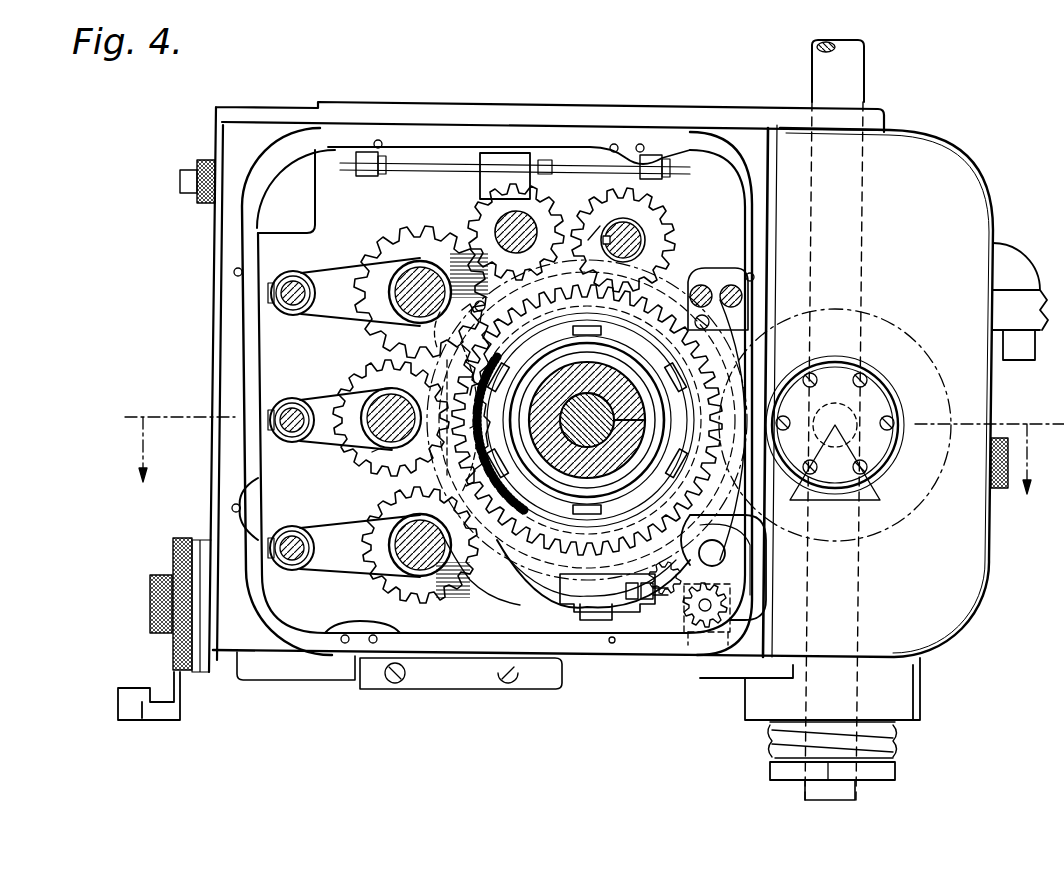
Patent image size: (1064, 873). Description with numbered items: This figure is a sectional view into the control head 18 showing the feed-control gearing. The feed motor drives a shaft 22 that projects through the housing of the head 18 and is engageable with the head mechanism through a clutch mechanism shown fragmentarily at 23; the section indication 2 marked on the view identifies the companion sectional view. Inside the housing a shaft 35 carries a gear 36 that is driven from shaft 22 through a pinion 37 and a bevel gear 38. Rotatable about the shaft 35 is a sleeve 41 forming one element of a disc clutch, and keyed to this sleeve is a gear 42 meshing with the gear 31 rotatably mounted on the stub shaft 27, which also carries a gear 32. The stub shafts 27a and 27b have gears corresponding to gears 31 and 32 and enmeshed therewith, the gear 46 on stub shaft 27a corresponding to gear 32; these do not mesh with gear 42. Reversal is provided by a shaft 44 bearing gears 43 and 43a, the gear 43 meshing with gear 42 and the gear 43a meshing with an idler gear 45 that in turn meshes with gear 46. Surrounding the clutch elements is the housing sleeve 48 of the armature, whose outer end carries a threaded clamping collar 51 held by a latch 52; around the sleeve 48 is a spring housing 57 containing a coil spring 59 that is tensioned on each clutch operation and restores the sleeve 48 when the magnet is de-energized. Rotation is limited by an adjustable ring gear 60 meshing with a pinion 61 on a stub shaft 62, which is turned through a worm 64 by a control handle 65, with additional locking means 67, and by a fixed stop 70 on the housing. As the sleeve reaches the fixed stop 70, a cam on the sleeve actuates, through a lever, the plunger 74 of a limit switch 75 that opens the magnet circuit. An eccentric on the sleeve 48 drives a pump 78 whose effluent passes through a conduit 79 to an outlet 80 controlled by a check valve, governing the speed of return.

The section line 2- 2 is at (593, 455).
The head 18 is at (922, 153).
The shaft 22 is at (830, 70).
The clutch mechanism 23 is at (887, 782).
The stub shaft 27 is at (363, 437).
The stub shaft 27a is at (401, 277).
The stub shaft 27b is at (404, 588).
The gear 31 is at (372, 368).
The gear 32 is at (372, 452).
The shaft 35 is at (470, 428).
The gear 36 is at (776, 368).
The pinion 37 is at (871, 324).
The bevel gear 38 is at (895, 382).
The sleeve 41 is at (582, 472).
The gear 42 is at (542, 246).
The gear 43 is at (648, 210).
The gear 43a is at (590, 238).
The shaft 44 is at (641, 241).
The idler gear 45 is at (492, 222).
The gear 46 is at (418, 236).
The housing sleeve 48 is at (504, 550).
The clamping collar 51 is at (446, 392).
The latch 52 is at (480, 360).
The spring housing 57 is at (492, 582).
The coil spring 59 is at (456, 518).
The ring gear 60 is at (760, 502).
The pinion 61 is at (712, 606).
The stub shaft 62 is at (726, 553).
The worm 64 is at (715, 660).
The control handle 65 is at (178, 688).
The locking means 67 is at (163, 576).
The fixed stop 70 is at (712, 288).
The plunger 74 is at (754, 275).
The limit switch 75 is at (745, 213).
The pump 78 is at (594, 622).
The conduit 79 is at (662, 600).
The outlet 80 is at (497, 166).